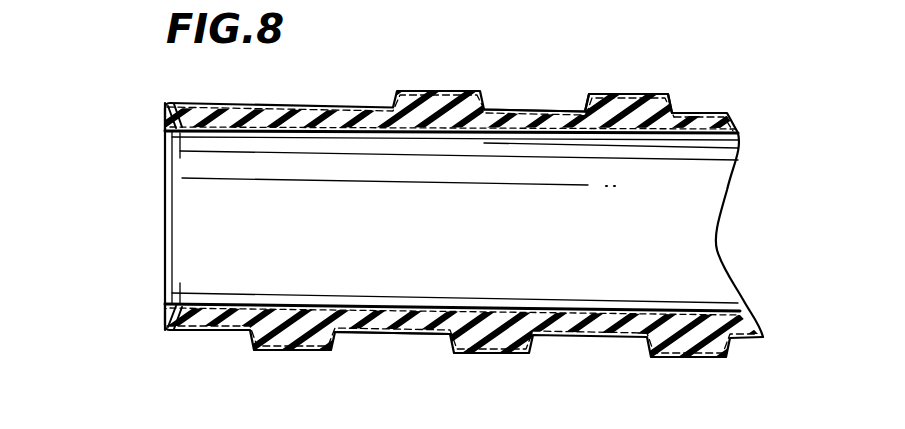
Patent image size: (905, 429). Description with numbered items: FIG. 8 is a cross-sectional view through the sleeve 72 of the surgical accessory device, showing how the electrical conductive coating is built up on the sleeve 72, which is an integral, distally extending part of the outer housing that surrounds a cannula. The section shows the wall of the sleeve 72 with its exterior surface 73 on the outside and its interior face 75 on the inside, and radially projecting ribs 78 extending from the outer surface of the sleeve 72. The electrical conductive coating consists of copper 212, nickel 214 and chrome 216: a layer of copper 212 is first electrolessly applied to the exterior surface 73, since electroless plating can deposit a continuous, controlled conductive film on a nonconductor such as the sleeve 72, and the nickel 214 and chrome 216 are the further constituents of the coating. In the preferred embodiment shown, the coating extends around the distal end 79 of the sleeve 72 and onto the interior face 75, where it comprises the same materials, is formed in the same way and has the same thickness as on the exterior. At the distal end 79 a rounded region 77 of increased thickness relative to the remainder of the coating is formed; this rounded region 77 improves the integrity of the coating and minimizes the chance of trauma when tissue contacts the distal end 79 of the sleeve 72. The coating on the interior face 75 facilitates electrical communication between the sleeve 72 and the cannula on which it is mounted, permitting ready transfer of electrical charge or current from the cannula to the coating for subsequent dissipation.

The sleeve 72 is at (704, 112).
The exterior surface 73 is at (528, 108).
The interior face 75 is at (343, 130).
The rounded region 77 is at (165, 121).
The radially projecting ribs 78 is at (633, 97).
The distal end 79 is at (166, 112).
The copper 212 is at (168, 138).
The nickel 214 is at (305, 107).
The chrome 216 is at (567, 107).